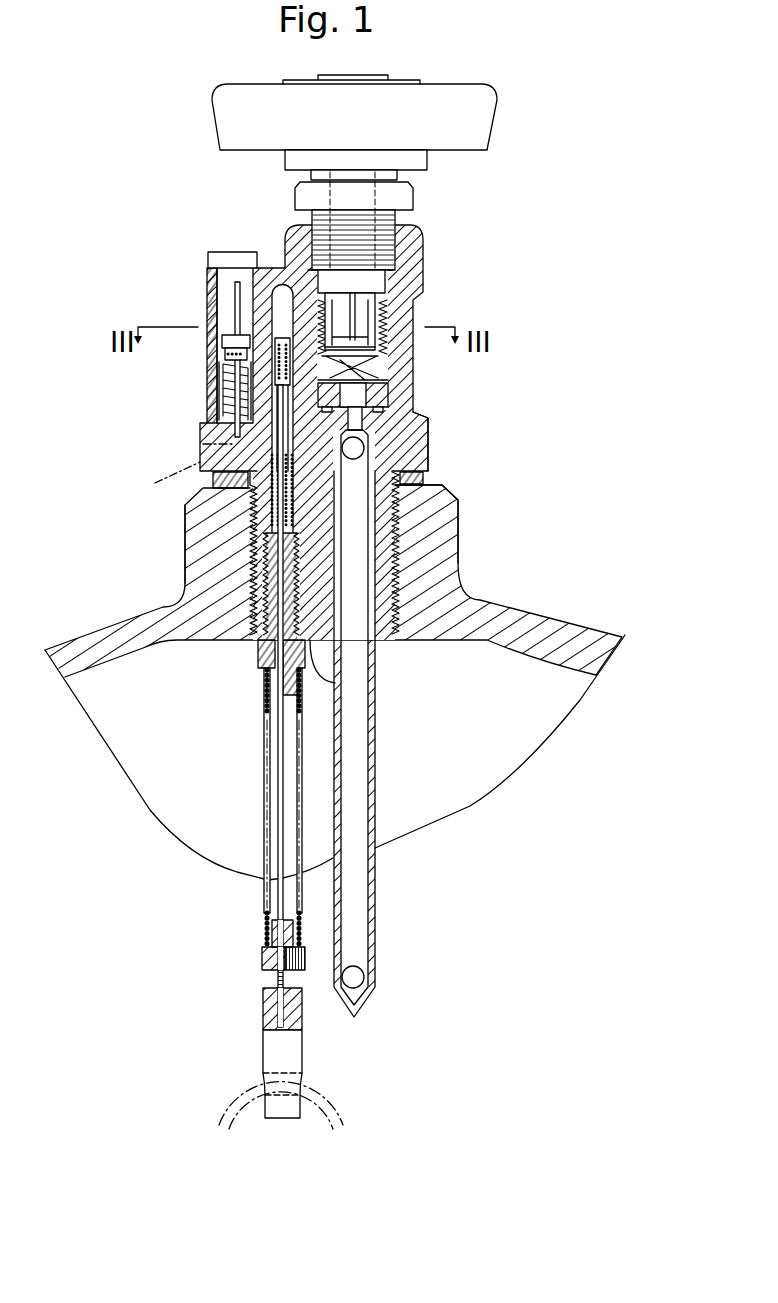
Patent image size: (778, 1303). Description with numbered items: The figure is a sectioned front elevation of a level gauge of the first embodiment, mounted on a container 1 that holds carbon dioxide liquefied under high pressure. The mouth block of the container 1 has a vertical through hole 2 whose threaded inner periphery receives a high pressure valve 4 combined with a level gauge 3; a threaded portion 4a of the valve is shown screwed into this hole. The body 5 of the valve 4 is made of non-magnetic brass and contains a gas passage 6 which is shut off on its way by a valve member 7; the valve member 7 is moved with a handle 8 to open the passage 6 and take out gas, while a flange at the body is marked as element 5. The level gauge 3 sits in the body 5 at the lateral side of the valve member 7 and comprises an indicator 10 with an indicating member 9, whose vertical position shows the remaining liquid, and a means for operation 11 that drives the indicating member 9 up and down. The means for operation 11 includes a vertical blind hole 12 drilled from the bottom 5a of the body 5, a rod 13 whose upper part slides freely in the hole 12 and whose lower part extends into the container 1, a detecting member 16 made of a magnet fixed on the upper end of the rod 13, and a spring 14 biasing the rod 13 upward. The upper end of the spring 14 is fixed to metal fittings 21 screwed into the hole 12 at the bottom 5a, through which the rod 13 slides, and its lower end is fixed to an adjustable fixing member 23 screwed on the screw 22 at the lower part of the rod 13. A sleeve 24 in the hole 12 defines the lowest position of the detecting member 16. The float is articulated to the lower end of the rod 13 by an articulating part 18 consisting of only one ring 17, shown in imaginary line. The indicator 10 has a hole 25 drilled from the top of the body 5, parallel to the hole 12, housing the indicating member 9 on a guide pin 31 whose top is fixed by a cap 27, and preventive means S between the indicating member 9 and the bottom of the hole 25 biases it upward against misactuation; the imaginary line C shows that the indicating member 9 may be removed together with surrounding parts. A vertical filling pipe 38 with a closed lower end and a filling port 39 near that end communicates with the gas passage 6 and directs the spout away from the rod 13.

The container 1 is at (582, 640).
The vertical through hole 2 is at (400, 553).
The level gauge 3 is at (195, 343).
The high pressure valve 4 is at (433, 258).
The threaded portion 4a is at (400, 610).
The body 5 is at (408, 430).
The bottom 5a is at (332, 690).
The gas passage 6 is at (413, 515).
The valve member 7 is at (357, 393).
The handle 8 is at (482, 97).
The indicating member 9 is at (228, 337).
The indicator 10 is at (218, 392).
The means for operation 11 is at (238, 980).
The vertical blind hole 12 is at (280, 290).
The rod 13 is at (280, 748).
The spring 14 is at (267, 913).
The detecting member 16 is at (340, 328).
The ring 17 is at (337, 1113).
The articulating or flexible part 18 is at (281, 1110).
The metal fittings 21 is at (260, 650).
The screw 22 is at (306, 960).
The adjustable fixing member 23 is at (262, 956).
The sleeve 24 is at (186, 545).
The hole 25 is at (225, 303).
The cap 27 is at (222, 258).
The piston rod 31 is at (232, 405).
The vertical filling pipe 38 is at (371, 775).
The filling port 39 is at (377, 990).
The preventive means S is at (222, 373).
The imaginary line C is at (182, 475).